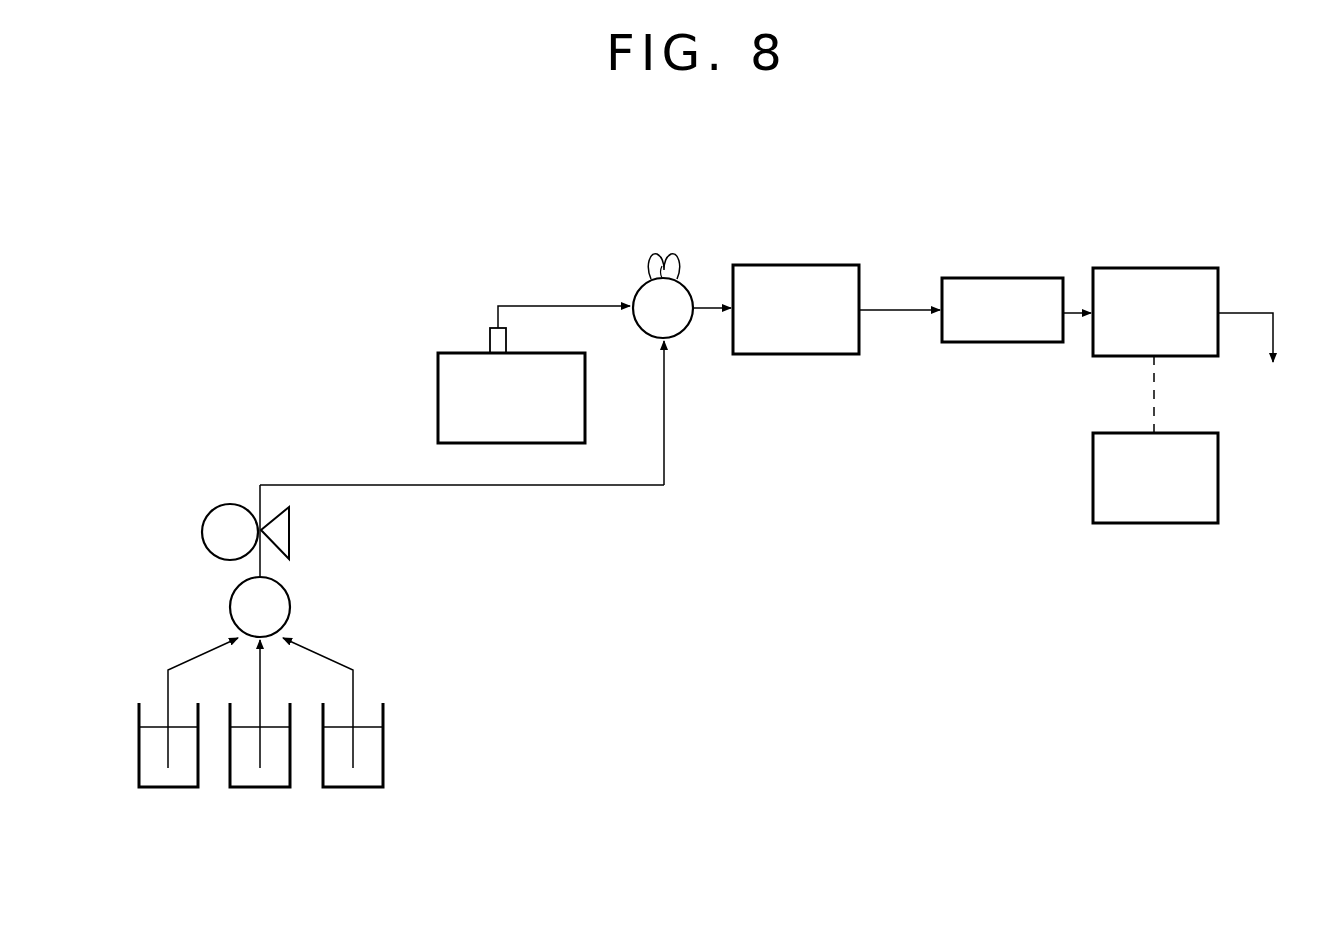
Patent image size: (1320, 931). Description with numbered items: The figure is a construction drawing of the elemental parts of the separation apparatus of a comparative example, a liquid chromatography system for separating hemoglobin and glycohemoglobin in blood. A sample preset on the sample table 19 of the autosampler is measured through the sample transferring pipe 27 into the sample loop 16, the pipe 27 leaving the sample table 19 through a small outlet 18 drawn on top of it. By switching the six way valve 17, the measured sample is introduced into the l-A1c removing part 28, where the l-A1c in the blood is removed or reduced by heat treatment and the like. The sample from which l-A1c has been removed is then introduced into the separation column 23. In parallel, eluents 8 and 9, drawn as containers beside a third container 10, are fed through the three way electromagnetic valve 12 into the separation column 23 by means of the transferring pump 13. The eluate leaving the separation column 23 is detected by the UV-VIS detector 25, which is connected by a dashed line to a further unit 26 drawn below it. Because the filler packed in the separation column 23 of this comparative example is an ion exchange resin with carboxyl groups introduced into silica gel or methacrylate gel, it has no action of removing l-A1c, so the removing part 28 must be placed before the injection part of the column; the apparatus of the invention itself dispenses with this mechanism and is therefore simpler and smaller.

The eluent 8 is at (170, 788).
The eluent 9 is at (260, 788).
The liquid container 10 is at (355, 788).
The three way electromagnetic valve 12 is at (230, 615).
The transferring pump 13 is at (202, 535).
The sample loop 16 is at (673, 260).
The six way valve 17 is at (677, 337).
The outlet port 18 is at (491, 328).
The sample table 19 is at (448, 351).
The separation column 23 is at (980, 278).
The UV-VIS detector 25 is at (1153, 268).
The recorder 26 is at (1093, 478).
The sample transferring pipe 27 is at (567, 305).
The l-A1c removing part 28 is at (800, 265).